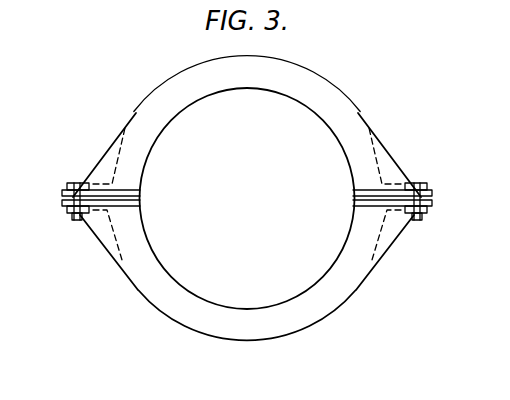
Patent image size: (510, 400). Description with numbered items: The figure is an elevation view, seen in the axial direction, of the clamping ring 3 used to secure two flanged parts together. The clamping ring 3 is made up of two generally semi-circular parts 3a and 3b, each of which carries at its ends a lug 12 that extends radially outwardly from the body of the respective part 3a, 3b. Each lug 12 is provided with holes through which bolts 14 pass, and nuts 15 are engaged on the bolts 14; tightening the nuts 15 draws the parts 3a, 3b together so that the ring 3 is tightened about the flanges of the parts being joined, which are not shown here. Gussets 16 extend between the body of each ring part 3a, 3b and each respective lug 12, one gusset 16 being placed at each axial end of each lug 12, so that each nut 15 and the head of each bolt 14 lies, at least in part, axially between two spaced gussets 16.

The clamping ring 3 is at (248, 192).
The semi-circular part 3a is at (336, 101).
The semi-circular part 3b is at (351, 273).
The lug 12 is at (248, 212).
The bolt 14 is at (78, 221).
The nut 15 is at (68, 212).
The gusset 16 is at (104, 163).